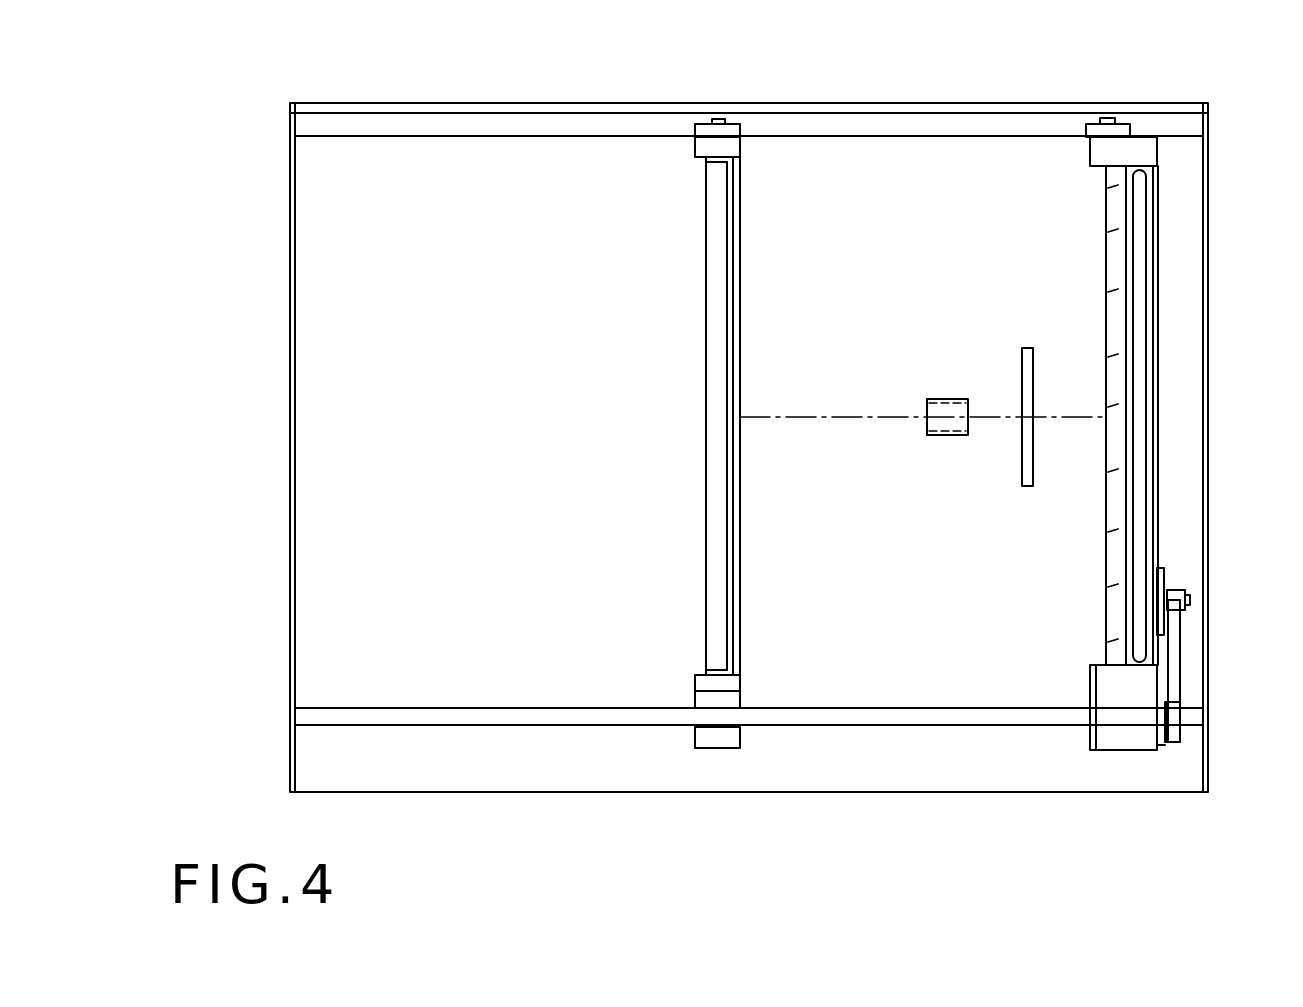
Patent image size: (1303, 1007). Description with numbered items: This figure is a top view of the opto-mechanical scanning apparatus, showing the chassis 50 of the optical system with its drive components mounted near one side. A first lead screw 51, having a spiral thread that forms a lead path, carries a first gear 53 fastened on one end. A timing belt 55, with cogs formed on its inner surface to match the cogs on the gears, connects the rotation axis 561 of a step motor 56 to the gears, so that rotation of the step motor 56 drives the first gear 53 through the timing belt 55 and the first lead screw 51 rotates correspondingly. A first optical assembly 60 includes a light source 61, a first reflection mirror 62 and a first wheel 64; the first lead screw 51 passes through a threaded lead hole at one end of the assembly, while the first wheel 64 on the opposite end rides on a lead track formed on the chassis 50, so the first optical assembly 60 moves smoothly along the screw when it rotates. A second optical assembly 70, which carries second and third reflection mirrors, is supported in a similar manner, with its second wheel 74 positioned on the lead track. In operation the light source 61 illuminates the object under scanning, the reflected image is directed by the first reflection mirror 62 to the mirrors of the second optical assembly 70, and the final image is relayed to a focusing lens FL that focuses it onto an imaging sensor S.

The chassis 50 is at (294, 310).
The first lead screw 51 is at (925, 722).
The first gear 53 is at (1162, 745).
The timing belt 55 is at (1172, 665).
The step motor 56 is at (1160, 575).
The rotation axis 561 is at (1186, 596).
The first optical assembly 60 is at (1155, 265).
The light source 61 is at (1140, 203).
The first reflection mirror 62 is at (1112, 535).
The first wheel 64 is at (1097, 130).
The second optical assembly 70 is at (740, 328).
The second wheel 74 is at (703, 130).
The focusing lens FL is at (947, 410).
The imaging sensor S is at (1028, 395).